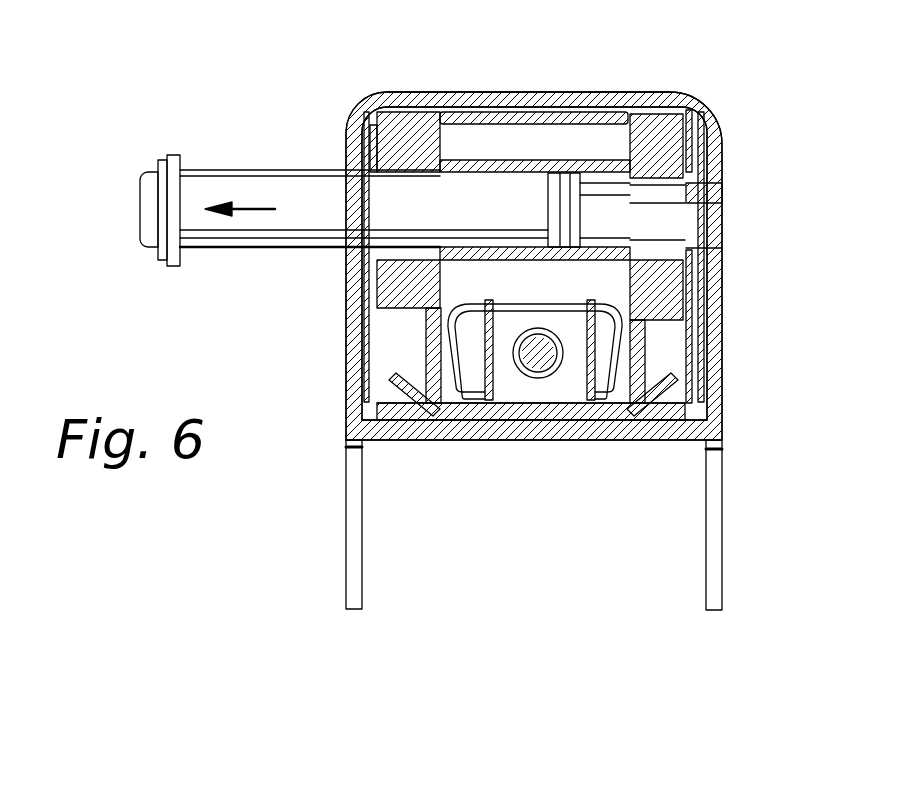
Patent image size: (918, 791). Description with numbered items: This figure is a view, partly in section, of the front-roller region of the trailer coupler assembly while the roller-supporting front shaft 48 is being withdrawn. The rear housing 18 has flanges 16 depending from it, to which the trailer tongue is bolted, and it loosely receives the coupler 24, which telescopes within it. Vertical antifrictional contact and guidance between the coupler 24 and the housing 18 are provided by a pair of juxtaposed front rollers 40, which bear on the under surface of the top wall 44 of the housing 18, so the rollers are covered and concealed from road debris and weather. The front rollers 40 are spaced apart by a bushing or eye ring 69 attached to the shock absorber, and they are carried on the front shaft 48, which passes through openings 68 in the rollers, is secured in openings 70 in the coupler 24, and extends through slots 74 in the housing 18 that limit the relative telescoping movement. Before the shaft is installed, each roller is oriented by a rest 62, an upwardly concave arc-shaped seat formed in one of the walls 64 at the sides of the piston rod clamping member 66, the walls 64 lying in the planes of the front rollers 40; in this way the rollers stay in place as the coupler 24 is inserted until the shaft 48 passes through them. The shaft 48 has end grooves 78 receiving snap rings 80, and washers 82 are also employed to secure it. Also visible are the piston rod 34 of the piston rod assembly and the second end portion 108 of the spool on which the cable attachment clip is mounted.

The flanges 16 is at (348, 533).
The rear housing 18 is at (723, 123).
The coupler 24 is at (702, 167).
The piston rod 34 is at (560, 375).
The front rollers 40 is at (432, 118).
The top wall 44 is at (542, 92).
The front shaft 48 is at (208, 230).
The rests 62 is at (428, 315).
The walls 64 is at (427, 352).
The piston rod clamping member 66 is at (603, 291).
The openings 68 is at (410, 170).
The bushing or eye ring 69 is at (473, 247).
The openings 70 is at (358, 112).
The slots 74 is at (366, 178).
The end grooves 78 is at (548, 216).
The snap rings 80 is at (157, 172).
The washers 82 is at (200, 140).
The second end portion 108 is at (528, 378).